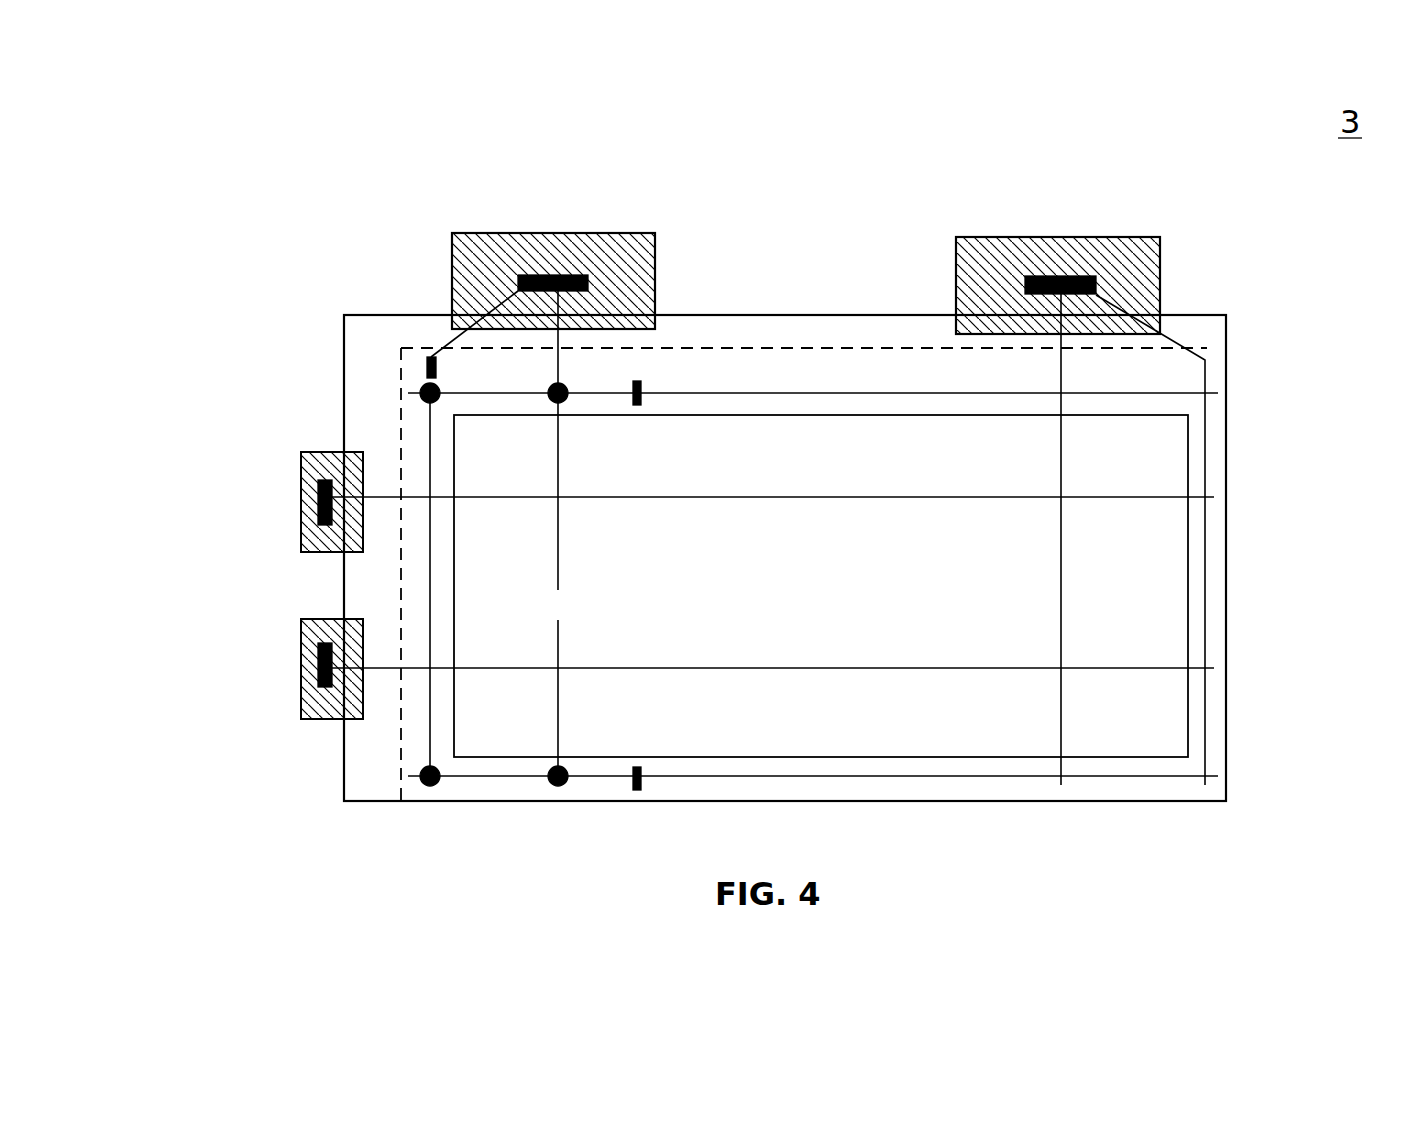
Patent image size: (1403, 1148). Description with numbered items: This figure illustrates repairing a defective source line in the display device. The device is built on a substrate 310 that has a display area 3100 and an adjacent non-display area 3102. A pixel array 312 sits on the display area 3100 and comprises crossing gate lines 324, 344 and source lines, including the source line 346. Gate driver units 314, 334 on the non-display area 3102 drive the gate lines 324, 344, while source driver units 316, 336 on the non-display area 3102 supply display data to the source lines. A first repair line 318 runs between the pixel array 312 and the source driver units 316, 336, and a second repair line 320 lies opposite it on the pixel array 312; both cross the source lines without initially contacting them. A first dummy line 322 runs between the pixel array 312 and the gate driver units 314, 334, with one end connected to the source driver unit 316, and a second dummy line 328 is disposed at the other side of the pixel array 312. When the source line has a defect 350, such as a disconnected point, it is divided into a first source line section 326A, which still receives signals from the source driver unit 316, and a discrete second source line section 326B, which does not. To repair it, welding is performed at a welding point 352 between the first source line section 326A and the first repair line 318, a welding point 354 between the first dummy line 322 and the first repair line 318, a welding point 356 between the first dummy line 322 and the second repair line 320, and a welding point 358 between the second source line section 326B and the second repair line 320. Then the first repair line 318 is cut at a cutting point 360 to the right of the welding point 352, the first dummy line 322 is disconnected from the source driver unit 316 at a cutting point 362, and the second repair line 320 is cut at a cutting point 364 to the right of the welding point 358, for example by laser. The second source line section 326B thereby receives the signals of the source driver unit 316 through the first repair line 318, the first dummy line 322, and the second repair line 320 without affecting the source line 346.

The substrate 310 is at (1213, 314).
The pixel array 312 is at (1188, 458).
The gate driver unit 314 is at (318, 498).
The source driver unit 316 is at (548, 250).
The first repair line 318 is at (742, 393).
The second repair line 320 is at (900, 777).
The first dummy line 322 is at (403, 425).
The gate line 324 is at (802, 497).
The first source line section 326A is at (558, 531).
The second source line section 326B is at (558, 641).
The second dummy line 328 is at (1205, 577).
The gate driver unit 334 is at (318, 668).
The source driver unit 336 is at (1062, 243).
The gate line 344 is at (802, 668).
The source line 346 is at (1061, 595).
The defect 350 is at (570, 605).
The welding point 352 is at (568, 390).
The welding point 354 is at (440, 390).
The welding point 356 is at (430, 776).
The welding point 358 is at (558, 776).
The cutting point 360 is at (645, 385).
The cutting point 362 is at (427, 357).
The cutting point 364 is at (641, 790).
The display area 3100 is at (857, 380).
The non-display area 3102 is at (802, 327).